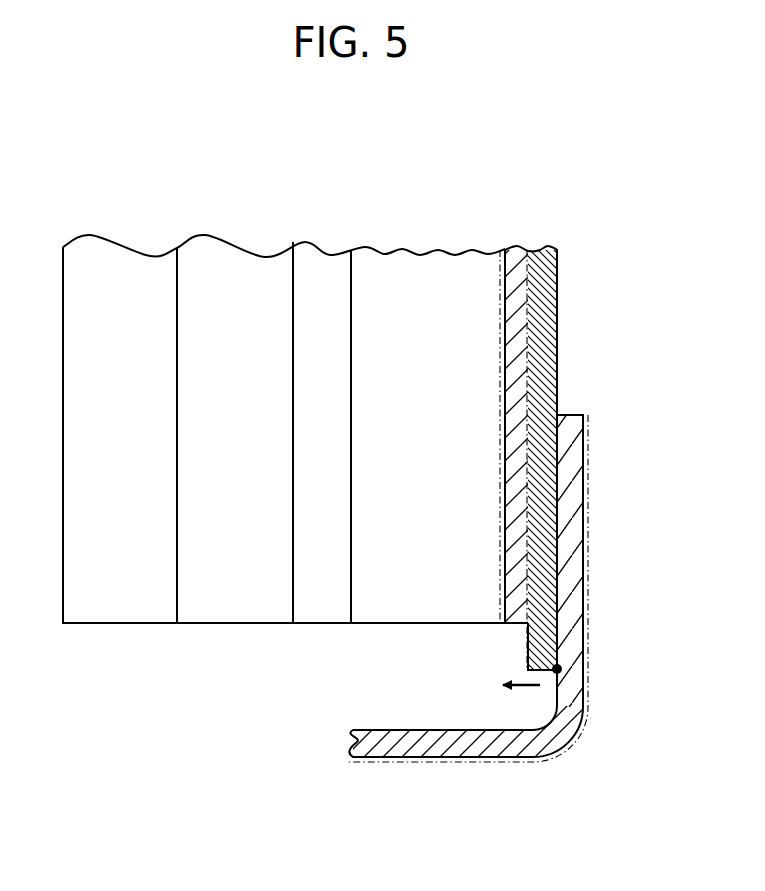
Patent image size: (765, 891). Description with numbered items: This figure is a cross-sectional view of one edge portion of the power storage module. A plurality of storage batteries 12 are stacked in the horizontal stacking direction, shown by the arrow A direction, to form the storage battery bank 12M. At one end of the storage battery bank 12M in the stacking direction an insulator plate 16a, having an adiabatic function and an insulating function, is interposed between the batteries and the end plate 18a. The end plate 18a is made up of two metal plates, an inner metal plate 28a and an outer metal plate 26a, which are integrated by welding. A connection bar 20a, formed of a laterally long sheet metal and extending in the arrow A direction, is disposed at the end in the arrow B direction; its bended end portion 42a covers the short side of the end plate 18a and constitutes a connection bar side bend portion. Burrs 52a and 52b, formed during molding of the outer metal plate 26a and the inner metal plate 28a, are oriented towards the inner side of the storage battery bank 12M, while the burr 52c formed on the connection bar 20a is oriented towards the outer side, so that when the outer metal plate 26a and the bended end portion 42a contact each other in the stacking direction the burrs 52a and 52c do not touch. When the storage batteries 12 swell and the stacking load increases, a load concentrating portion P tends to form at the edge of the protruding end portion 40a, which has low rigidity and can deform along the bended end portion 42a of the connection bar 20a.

The storage battery 12 is at (223, 253).
The storage battery bank 12M is at (247, 195).
The insulator plate 16a is at (316, 253).
The end plate 18a is at (531, 404).
The inner metal plate 28a is at (517, 246).
The outer metal plate 26a is at (551, 421).
The bended end portion 42a is at (577, 513).
The protruding end portion 40a is at (548, 652).
The connection bar 20a is at (422, 759).
The burr 52a is at (526, 643).
The burr 52b is at (499, 558).
The burr 52c is at (567, 752).
The load concentrating portion P is at (562, 669).
The arrow A direction A is at (289, 790).
The arrow B direction B is at (671, 672).